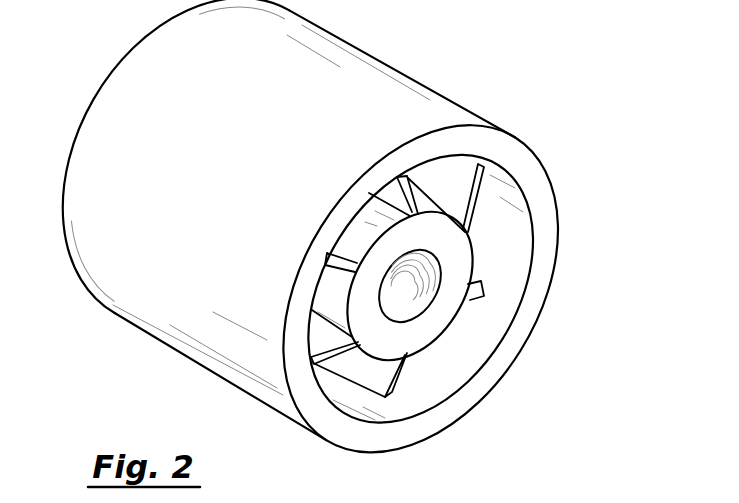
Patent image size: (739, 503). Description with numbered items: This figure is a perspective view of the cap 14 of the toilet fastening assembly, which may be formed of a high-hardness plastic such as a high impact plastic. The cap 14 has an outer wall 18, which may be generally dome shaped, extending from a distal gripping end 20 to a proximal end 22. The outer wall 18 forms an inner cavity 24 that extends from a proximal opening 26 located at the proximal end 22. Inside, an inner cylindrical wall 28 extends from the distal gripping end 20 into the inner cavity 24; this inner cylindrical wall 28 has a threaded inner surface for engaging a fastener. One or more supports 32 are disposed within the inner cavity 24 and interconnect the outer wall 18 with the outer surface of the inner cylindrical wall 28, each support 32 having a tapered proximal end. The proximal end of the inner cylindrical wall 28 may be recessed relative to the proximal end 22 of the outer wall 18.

The cap 14 is at (186, 199).
The outer wall 18 is at (382, 72).
The distal gripping end 20 is at (91, 111).
The proximal end 22 is at (543, 258).
The inner cavity 24 is at (483, 223).
The proximal opening 26 is at (360, 408).
The inner cylindrical wall 28 is at (425, 325).
The support 32 is at (565, 495).